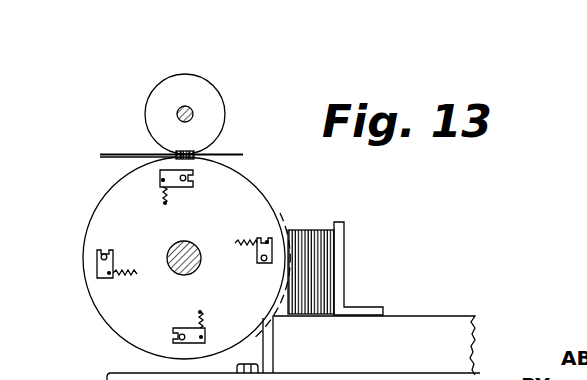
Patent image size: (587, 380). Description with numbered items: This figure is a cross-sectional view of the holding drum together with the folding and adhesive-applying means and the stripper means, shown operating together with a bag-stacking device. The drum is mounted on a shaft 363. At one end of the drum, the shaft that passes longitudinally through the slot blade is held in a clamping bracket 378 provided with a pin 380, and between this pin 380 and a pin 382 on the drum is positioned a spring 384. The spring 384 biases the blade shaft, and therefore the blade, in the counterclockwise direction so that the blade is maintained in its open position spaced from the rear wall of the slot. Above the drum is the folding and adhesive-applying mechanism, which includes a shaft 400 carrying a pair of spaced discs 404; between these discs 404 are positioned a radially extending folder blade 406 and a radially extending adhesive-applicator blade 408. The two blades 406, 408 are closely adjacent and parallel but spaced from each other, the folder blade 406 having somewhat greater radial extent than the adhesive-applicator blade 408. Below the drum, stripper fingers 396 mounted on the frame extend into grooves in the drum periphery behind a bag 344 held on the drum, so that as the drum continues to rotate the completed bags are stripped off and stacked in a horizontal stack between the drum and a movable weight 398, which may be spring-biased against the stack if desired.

The bag 344 is at (312, 248).
The shaft 363 is at (176, 254).
The clamping bracket 378 is at (195, 182).
The pin 380 is at (162, 181).
The pin 382 is at (164, 204).
The spring 384 is at (169, 201).
The stripper fingers 396 is at (264, 348).
The movable weight 398 is at (338, 268).
The shaft 400 is at (193, 110).
The spaced discs 404 is at (170, 92).
The folder blade 406 is at (196, 154).
The adhesive-applicator blade 408 is at (172, 155).